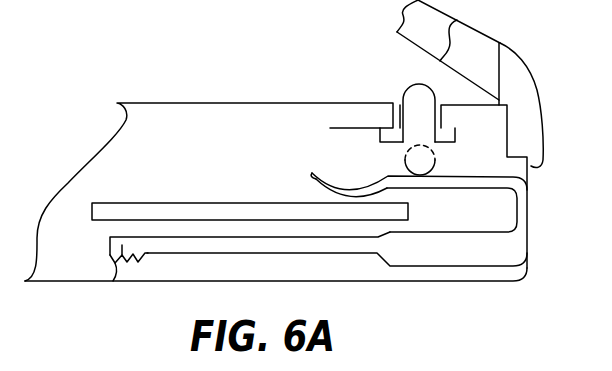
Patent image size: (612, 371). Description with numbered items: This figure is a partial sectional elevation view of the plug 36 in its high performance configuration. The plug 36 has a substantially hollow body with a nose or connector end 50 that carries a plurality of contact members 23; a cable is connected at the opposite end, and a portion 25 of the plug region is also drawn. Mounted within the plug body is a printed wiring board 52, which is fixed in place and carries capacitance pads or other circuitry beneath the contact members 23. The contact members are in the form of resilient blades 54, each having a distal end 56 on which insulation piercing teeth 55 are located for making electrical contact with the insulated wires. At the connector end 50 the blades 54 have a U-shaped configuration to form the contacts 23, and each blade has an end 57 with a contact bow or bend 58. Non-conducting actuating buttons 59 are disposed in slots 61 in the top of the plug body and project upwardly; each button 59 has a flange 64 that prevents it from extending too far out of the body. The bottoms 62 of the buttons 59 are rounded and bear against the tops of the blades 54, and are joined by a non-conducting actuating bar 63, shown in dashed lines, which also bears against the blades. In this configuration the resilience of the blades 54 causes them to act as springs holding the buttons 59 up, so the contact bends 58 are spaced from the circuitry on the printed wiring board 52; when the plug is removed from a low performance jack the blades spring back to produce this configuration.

The contact members 23 is at (528, 246).
The arm 25 is at (524, 57).
The plug 36 is at (123, 160).
The connector end 50 is at (531, 267).
The printed wiring board 52 is at (242, 202).
The blades 54 is at (473, 250).
The insulation piercing teeth 55 is at (149, 254).
The distal end 56 is at (113, 281).
The end 57 is at (313, 177).
The contact bend 58 is at (369, 182).
The buttons 59 is at (407, 87).
The slots 61 is at (400, 106).
The bottoms 62 is at (458, 168).
The actuating bar 63 is at (421, 163).
The flange 64 is at (378, 140).